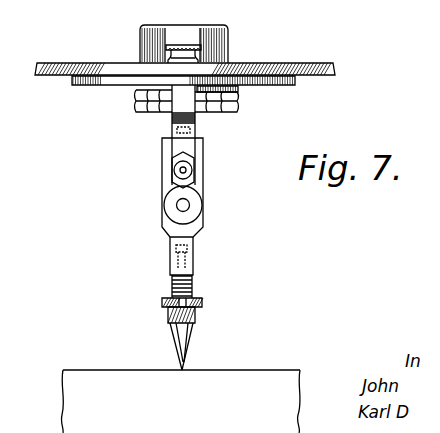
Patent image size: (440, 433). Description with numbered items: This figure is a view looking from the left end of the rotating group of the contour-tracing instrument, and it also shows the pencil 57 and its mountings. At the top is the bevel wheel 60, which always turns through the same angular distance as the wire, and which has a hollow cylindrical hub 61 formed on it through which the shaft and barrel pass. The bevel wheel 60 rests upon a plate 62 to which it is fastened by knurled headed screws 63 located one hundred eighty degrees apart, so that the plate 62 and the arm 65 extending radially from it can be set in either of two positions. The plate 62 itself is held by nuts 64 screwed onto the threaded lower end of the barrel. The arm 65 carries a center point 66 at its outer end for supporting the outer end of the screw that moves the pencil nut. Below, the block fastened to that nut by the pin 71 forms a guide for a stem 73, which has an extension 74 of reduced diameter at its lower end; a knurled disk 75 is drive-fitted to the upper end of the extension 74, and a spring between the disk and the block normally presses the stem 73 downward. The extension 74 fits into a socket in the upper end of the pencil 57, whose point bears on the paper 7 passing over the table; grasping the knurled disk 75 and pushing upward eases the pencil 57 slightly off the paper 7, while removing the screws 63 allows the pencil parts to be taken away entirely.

The paper 7 is at (213, 370).
The pencil 57 is at (179, 368).
The bevel wheel 60 is at (290, 63).
The hollow cylindrical hub 61 is at (142, 36).
The plate 62 is at (118, 85).
The knurled headed screws 63 is at (183, 45).
The nuts 64 is at (224, 103).
The arm 65 is at (171, 124).
The center point 66 is at (196, 170).
The pin 71 is at (177, 206).
The stem 73 is at (172, 284).
The extension 74 is at (168, 313).
The knurled disk 75 is at (202, 303).